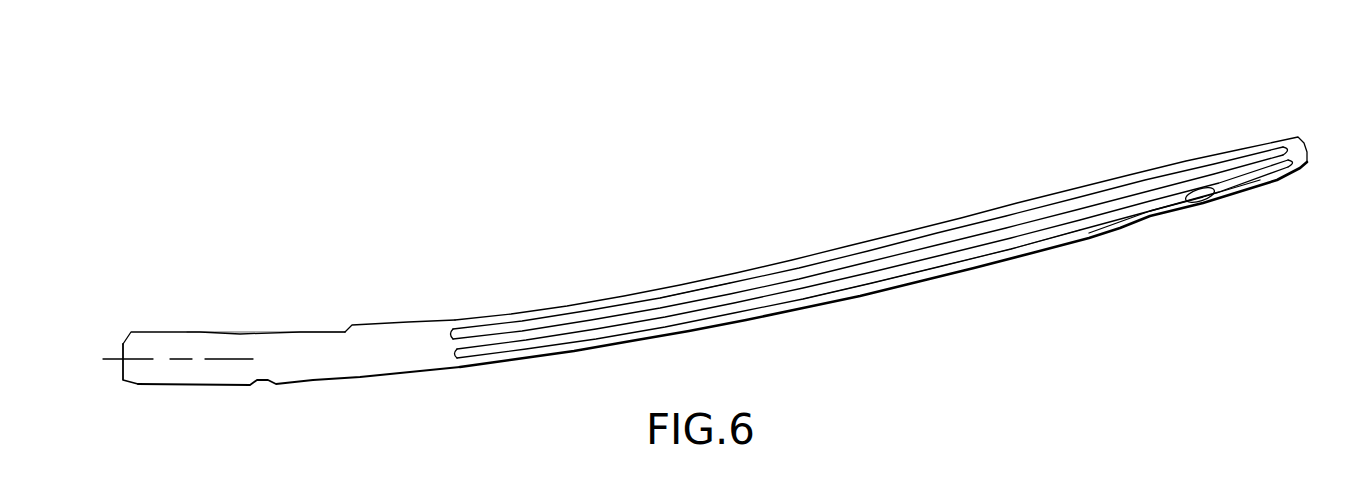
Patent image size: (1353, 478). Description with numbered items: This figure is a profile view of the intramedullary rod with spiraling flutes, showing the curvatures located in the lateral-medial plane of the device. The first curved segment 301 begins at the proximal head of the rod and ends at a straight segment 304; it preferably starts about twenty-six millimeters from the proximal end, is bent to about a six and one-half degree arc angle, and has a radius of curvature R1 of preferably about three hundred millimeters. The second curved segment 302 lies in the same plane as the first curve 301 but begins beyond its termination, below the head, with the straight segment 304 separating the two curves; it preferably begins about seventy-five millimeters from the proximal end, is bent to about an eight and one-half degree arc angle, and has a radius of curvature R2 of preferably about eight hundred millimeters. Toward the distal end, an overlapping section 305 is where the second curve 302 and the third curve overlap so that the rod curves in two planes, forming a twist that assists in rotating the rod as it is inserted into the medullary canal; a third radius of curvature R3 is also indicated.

The first curved segment 301 is at (344, 328).
The second curved segment 302 is at (887, 238).
The straight segment 304 is at (408, 321).
The overlapping section 305 is at (1020, 255).
The radius of curvature of first curve R1 is at (244, 331).
The radius of curvature of second curve R2 is at (718, 281).
The third radius R3 is at (1043, 447).